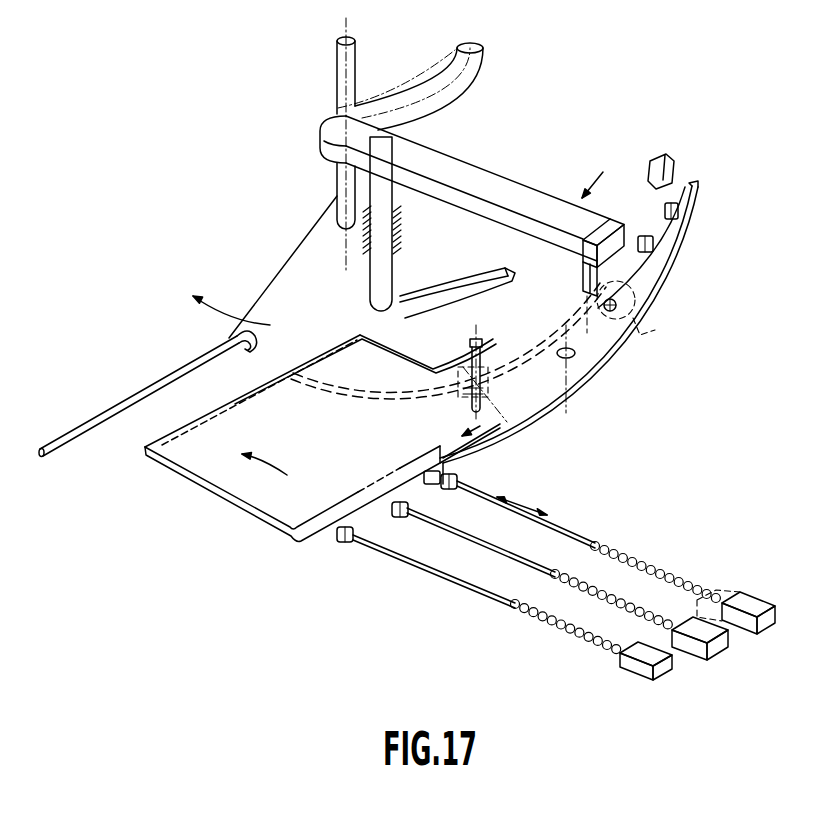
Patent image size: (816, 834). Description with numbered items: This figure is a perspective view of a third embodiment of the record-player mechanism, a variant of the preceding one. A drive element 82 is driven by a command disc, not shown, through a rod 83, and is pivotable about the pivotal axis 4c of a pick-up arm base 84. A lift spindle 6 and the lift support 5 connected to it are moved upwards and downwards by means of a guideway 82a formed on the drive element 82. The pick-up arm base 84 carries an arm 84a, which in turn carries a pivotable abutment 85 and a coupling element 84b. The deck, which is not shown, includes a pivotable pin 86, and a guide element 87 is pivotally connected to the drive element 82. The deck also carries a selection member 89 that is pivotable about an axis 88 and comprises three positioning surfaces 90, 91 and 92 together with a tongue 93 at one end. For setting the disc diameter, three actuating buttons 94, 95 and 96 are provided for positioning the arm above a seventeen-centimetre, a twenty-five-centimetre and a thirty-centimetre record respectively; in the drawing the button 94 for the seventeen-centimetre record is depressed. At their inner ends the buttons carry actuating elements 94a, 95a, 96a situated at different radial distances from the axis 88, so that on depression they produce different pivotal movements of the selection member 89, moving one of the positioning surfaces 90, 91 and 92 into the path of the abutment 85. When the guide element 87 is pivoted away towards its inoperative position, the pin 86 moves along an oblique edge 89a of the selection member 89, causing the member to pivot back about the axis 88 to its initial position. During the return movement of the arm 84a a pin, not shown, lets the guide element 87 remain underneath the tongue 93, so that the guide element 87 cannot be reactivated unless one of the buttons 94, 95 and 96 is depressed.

The pivotal axis 4c is at (340, 250).
The lift support 5 is at (382, 325).
The lift spindle 6 is at (373, 260).
The drive element 82 is at (282, 284).
The guideway 82a is at (473, 302).
The rod 83 is at (157, 386).
The pick-up arm base 84 is at (335, 141).
The arm 84a is at (492, 178).
The coupling element 84b is at (628, 302).
The pivotable abutment 85 is at (609, 232).
The pivotable pin 86 is at (480, 348).
The guide element 87 is at (633, 318).
The axis 88 is at (577, 378).
The selection member 89 is at (472, 434).
The oblique edge 89a is at (401, 350).
The positioning surface 90 is at (582, 283).
The positioning surface 91 is at (653, 246).
The positioning surface 92 is at (667, 210).
The tongue 93 is at (690, 192).
The actuating button 94 is at (752, 608).
The actuating element 94a is at (456, 474).
The actuating button 95 is at (710, 632).
The actuating element 95a is at (407, 505).
The actuating button 96 is at (655, 655).
The actuating element 96a is at (355, 530).